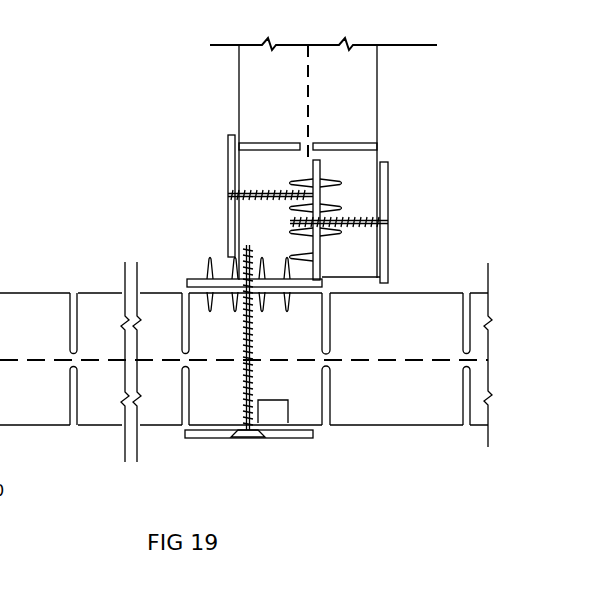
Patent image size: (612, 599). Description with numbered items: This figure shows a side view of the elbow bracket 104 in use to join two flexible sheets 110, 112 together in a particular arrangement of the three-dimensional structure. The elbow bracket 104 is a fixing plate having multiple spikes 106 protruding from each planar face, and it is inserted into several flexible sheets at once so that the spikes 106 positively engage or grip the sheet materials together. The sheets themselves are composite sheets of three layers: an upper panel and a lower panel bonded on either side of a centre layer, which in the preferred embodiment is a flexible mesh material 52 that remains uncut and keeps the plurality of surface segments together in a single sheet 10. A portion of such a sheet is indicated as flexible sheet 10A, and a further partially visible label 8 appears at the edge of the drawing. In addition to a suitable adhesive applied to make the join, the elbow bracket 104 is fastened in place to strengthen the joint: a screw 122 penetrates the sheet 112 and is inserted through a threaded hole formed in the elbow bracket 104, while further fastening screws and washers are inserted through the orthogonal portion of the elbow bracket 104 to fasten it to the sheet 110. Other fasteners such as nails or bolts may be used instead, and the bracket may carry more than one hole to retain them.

The flexible sheet 110 is at (361, 78).
The elbow bracket 104 is at (330, 172).
The spikes 106 is at (347, 247).
The flexible sheet 112 is at (209, 409).
The screw 122 is at (288, 423).
The flexible mesh material 52 is at (25, 346).
The flexible sheet 10A is at (56, 402).
The beam flange 8 is at (4, 254).
The sheet 10 is at (2, 461).